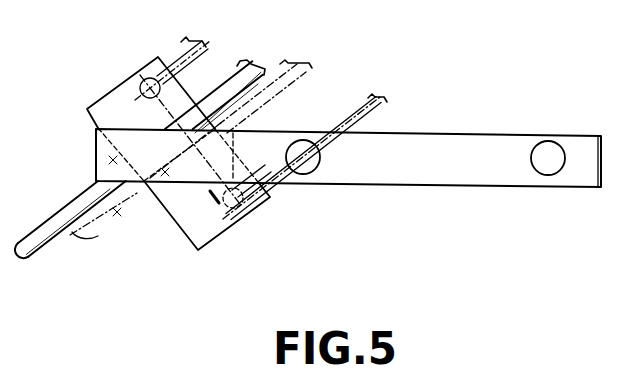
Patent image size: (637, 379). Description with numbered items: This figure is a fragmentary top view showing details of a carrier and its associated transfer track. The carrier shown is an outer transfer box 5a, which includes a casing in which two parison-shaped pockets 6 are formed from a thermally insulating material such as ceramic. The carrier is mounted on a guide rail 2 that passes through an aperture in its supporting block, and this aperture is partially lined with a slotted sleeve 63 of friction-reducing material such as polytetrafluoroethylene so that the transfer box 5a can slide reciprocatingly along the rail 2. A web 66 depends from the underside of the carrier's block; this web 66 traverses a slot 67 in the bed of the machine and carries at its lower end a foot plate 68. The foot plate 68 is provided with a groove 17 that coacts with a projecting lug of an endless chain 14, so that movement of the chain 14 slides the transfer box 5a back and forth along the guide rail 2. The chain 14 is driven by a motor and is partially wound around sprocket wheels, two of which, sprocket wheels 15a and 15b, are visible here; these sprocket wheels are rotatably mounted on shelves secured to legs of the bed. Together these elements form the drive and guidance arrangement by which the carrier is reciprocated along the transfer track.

The guide rail 2 is at (31, 252).
The outer transfer box 5a is at (497, 170).
The parison-shaped pocket 6 is at (294, 146).
The endless chain 14 is at (348, 118).
The sprocket wheel 15a is at (243, 205).
The sprocket wheel 15b is at (212, 44).
The groove 17 is at (235, 208).
The slotted sleeve 63 is at (95, 147).
The web 66 is at (167, 173).
The slot 67 is at (120, 214).
The foot plate 68 is at (203, 238).